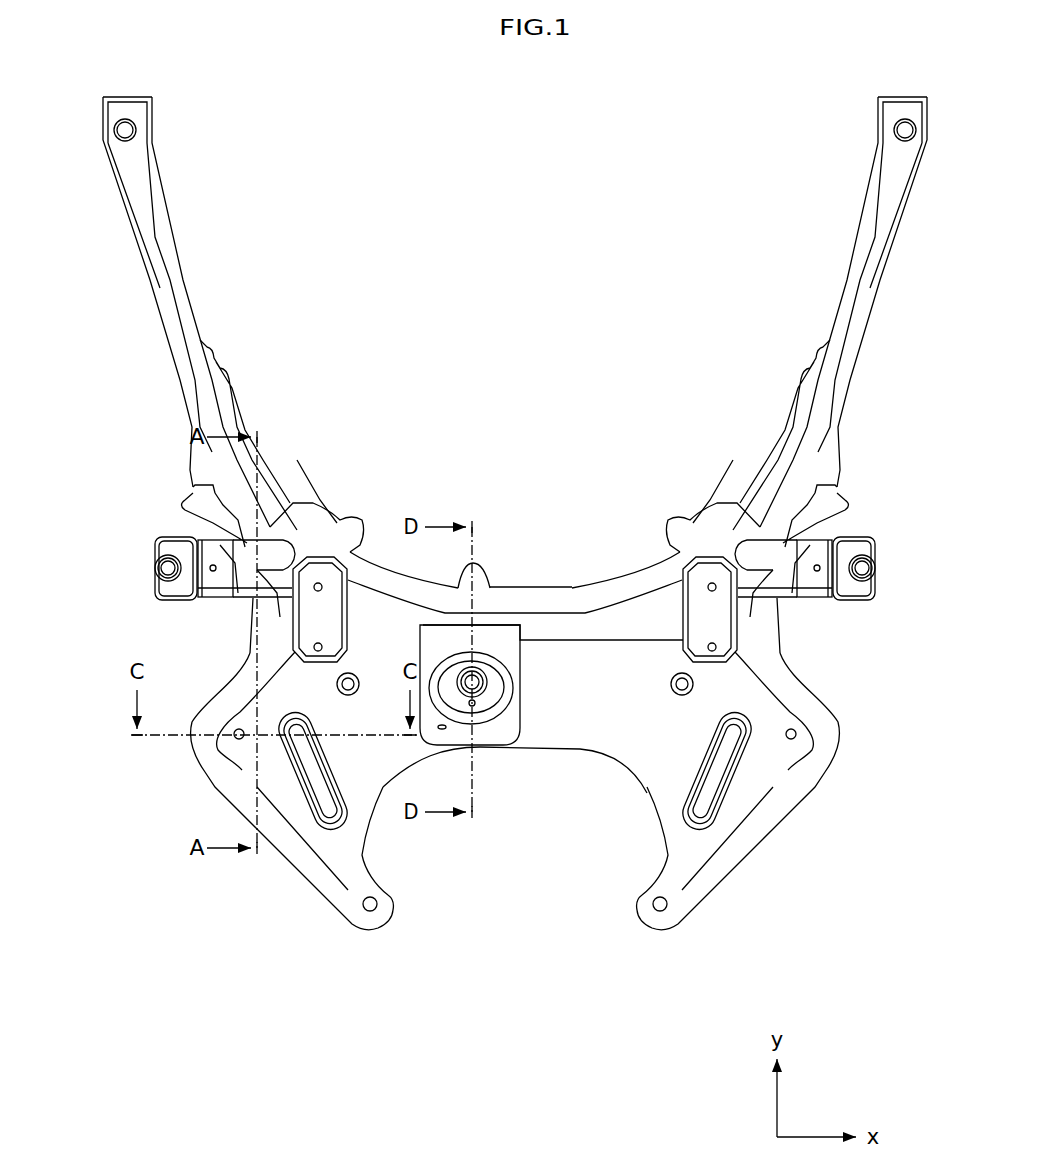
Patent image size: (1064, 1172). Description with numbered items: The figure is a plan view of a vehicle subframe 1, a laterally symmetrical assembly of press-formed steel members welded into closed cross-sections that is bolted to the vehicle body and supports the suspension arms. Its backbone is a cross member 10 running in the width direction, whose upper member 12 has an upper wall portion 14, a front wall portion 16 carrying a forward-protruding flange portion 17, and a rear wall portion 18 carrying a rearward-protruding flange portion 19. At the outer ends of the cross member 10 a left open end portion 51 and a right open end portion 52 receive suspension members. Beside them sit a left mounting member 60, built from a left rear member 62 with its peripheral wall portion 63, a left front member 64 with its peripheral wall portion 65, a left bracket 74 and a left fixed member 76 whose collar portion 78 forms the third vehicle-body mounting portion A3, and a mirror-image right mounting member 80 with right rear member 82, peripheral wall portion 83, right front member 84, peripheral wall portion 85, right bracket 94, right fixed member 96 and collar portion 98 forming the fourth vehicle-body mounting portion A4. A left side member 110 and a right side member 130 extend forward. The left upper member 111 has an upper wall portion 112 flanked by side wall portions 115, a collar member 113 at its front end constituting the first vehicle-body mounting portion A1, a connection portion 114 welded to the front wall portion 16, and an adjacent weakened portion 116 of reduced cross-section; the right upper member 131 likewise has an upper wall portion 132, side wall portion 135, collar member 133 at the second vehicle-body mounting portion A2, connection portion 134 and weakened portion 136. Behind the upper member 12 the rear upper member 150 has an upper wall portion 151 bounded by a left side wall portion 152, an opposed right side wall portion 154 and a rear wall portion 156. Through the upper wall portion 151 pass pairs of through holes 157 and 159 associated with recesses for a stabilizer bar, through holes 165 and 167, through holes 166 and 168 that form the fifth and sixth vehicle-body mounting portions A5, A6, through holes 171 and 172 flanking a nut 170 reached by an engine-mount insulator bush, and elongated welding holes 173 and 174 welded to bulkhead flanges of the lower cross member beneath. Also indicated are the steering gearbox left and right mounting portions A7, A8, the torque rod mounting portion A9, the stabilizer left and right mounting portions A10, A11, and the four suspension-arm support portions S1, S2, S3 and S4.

The subframe 1 is at (280, 162).
The cross member 10 is at (514, 561).
The upper member 12 is at (515, 573).
The upper wall portion 14 is at (510, 612).
The front wall portion 16 is at (487, 580).
The flange portion 17 is at (551, 587).
The rear wall portion 18 is at (490, 637).
The flange portion 19 is at (448, 637).
The left open end portion 51 is at (207, 515).
The right open end portion 52 is at (822, 515).
The left mounting member 60 is at (258, 710).
The left rear member 62 is at (258, 598).
The peripheral wall portion 63 is at (223, 600).
The left front member 64 is at (290, 533).
The peripheral wall portion 65 is at (198, 507).
The left bracket 74 is at (200, 597).
The left fixed member 76 is at (160, 596).
The collar member 78 is at (156, 568).
The right mounting member 80 is at (767, 700).
The right rear member 82 is at (775, 600).
The peripheral wall portion 83 is at (808, 600).
The right front member 84 is at (742, 537).
The peripheral wall portion 85 is at (830, 508).
The right bracket 94 is at (838, 598).
The right fixed member 96 is at (874, 597).
The collar member 98 is at (877, 568).
The left side member 110 is at (193, 284).
The left upper member 111 is at (210, 338).
The upper wall portion 112 is at (155, 237).
The collar member 113 is at (140, 135).
The connection portion 114 is at (262, 487).
The side wall portion 115 is at (147, 272).
The weakened portion 116 is at (243, 412).
The right side member 130 is at (818, 284).
The right upper member 131 is at (830, 325).
The upper wall portion 132 is at (883, 207).
The collar member 133 is at (892, 134).
The connection portion 134 is at (770, 487).
The side wall portion 135 is at (875, 297).
The weakened portion 136 is at (792, 403).
The rear upper member 150 is at (516, 791).
The upper wall portion 151 is at (613, 742).
The left side wall portion 152 is at (288, 856).
The right strut portion 154 is at (745, 855).
The rear wall portion 156 is at (520, 752).
The through holes 157 is at (319, 585).
The through holes 159 is at (711, 585).
The through hole 165 is at (238, 740).
The through hole 166 is at (368, 912).
The through hole 167 is at (792, 740).
The through hole 168 is at (661, 910).
The nut 170 is at (492, 682).
The through hole 171 is at (356, 689).
The through hole 172 is at (678, 690).
The welding hole 173 is at (318, 765).
The welding hole 174 is at (707, 768).
The first vehicle-body mounting portion A1 is at (174, 96).
The second vehicle-body mounting portion A2 is at (858, 96).
The third vehicle-body mounting portion A3 is at (131, 570).
The fourth vehicle-body mounting portion A4 is at (898, 571).
The fifth vehicle-body mounting portion A5 is at (324, 927).
The sixth vehicle-body mounting portion A6 is at (704, 927).
The steering gearbox left mounting portion A7 is at (440, 638).
The steering gearbox right mounting portion A8 is at (652, 642).
The torque rod mounting portion A9 is at (498, 688).
The stabilizer left mounting portion A10 is at (357, 600).
The stabilizer right mounting portion A11 is at (673, 603).
The first support portion S1 is at (180, 560).
The second support portion S2 is at (849, 560).
The third support portion S3 is at (252, 805).
The fourth support portion S4 is at (779, 805).